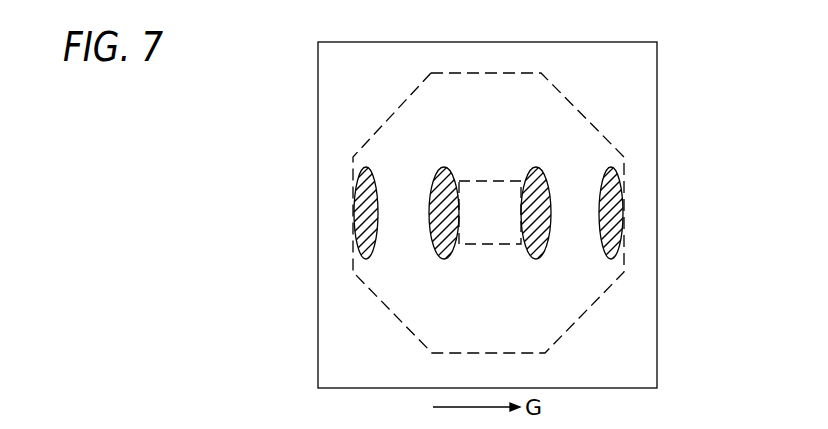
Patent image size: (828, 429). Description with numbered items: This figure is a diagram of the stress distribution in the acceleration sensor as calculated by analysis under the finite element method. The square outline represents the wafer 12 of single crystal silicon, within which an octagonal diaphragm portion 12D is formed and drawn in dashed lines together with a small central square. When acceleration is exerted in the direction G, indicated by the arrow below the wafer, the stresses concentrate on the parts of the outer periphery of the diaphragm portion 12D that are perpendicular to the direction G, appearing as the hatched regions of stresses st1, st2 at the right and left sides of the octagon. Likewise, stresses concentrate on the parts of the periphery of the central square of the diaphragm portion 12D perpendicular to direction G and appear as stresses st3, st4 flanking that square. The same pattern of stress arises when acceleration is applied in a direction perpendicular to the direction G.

The wafer 12 is at (657, 57).
The diaphragm portion 12D is at (578, 135).
The stress st1 is at (620, 207).
The stress st2 is at (357, 207).
The stress st3 is at (531, 172).
The stress st4 is at (446, 172).